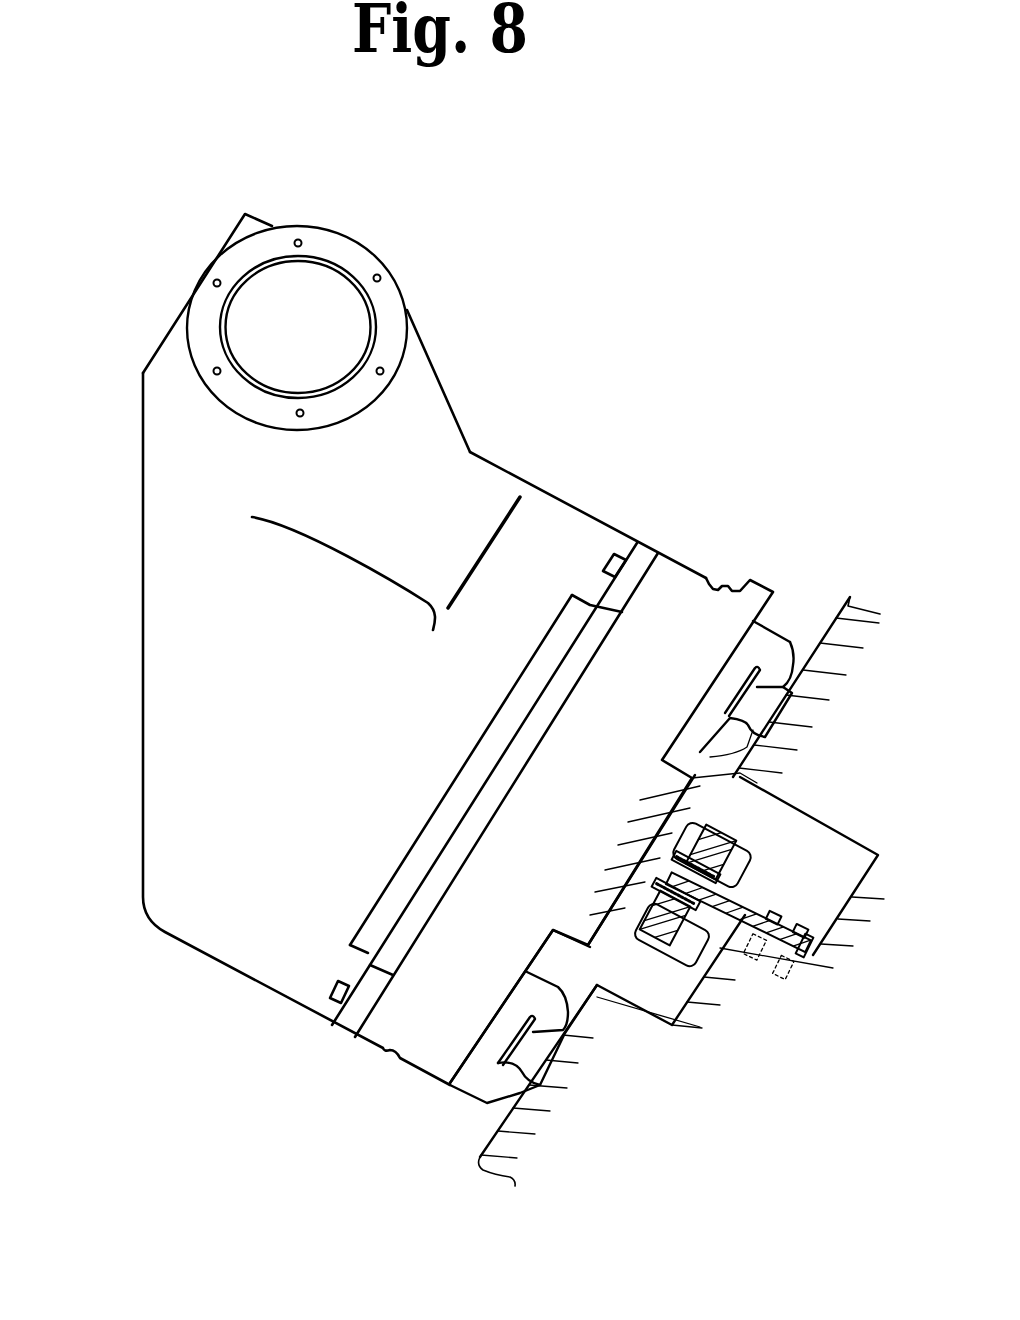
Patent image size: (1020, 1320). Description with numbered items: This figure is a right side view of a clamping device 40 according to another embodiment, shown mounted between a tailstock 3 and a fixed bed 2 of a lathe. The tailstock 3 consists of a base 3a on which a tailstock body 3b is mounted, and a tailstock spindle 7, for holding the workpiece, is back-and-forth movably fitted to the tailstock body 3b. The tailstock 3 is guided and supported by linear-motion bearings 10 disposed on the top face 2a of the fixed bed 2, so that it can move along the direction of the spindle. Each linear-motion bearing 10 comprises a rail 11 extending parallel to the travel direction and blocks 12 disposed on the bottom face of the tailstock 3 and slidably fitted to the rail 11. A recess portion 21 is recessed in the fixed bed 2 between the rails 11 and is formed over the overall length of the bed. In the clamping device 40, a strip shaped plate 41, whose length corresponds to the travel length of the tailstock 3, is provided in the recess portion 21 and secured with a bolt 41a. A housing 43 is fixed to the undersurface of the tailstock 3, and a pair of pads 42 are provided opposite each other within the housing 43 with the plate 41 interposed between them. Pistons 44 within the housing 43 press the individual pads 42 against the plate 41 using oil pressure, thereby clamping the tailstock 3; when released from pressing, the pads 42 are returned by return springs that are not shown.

The fixed bed 2 is at (474, 1157).
The top face 2a is at (487, 1138).
The tailstock 3 is at (135, 490).
The base 3a is at (683, 558).
The tailstock body 3b is at (478, 455).
The tailstock spindle 7 is at (323, 265).
The linear-motion bearing 10 is at (838, 535).
The rail 11 is at (790, 642).
The block 12 is at (773, 697).
The recess portion 21 is at (851, 880).
The clamping device 40 is at (771, 827).
The strip shaped plate 41 is at (748, 899).
The bolt 41a is at (806, 930).
The pad 42 is at (667, 848).
The housing 43 is at (701, 799).
The piston 44 is at (727, 838).